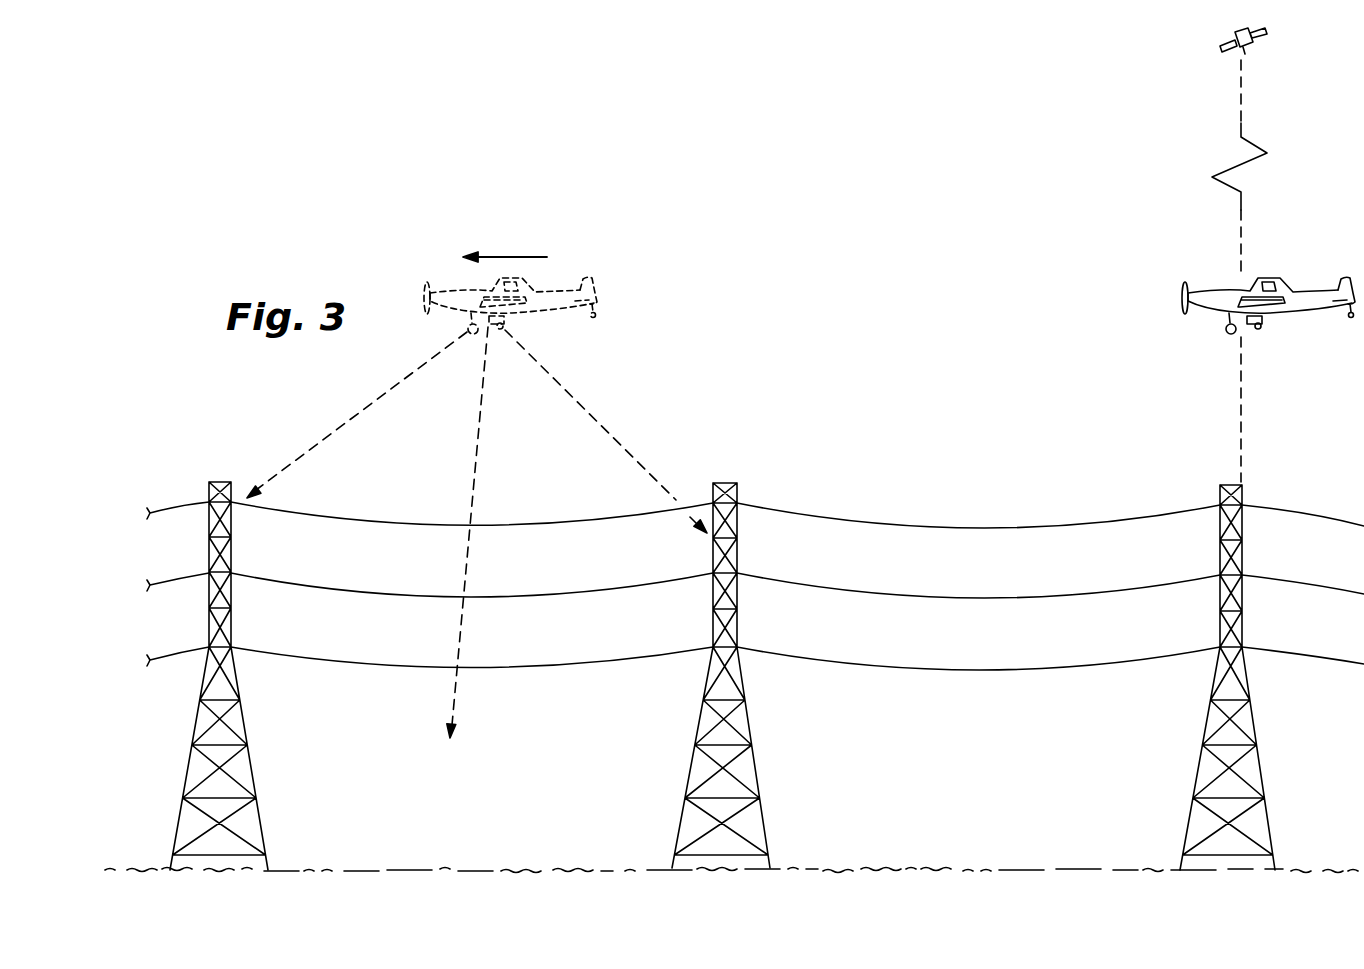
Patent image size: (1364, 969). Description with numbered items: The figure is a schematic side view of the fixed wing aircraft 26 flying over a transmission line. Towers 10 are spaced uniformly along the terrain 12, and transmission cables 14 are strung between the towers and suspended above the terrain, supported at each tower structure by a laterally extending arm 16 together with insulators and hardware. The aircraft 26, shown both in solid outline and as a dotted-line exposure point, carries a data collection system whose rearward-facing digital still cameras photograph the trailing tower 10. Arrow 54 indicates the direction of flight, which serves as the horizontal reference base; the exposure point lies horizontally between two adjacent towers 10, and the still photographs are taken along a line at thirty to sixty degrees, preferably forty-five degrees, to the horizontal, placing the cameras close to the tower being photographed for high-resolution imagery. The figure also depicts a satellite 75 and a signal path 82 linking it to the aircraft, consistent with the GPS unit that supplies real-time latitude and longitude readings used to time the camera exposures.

The towers 10 is at (253, 767).
The terrain 12 is at (480, 868).
The transmission cables 14 is at (535, 596).
The laterally extending arm 16 is at (587, 407).
The fixed wing aircraft 26 is at (558, 290).
The direction of flight 54 is at (540, 256).
The GPS satellite 75 is at (1256, 58).
The GPS signal link 82 is at (1245, 287).